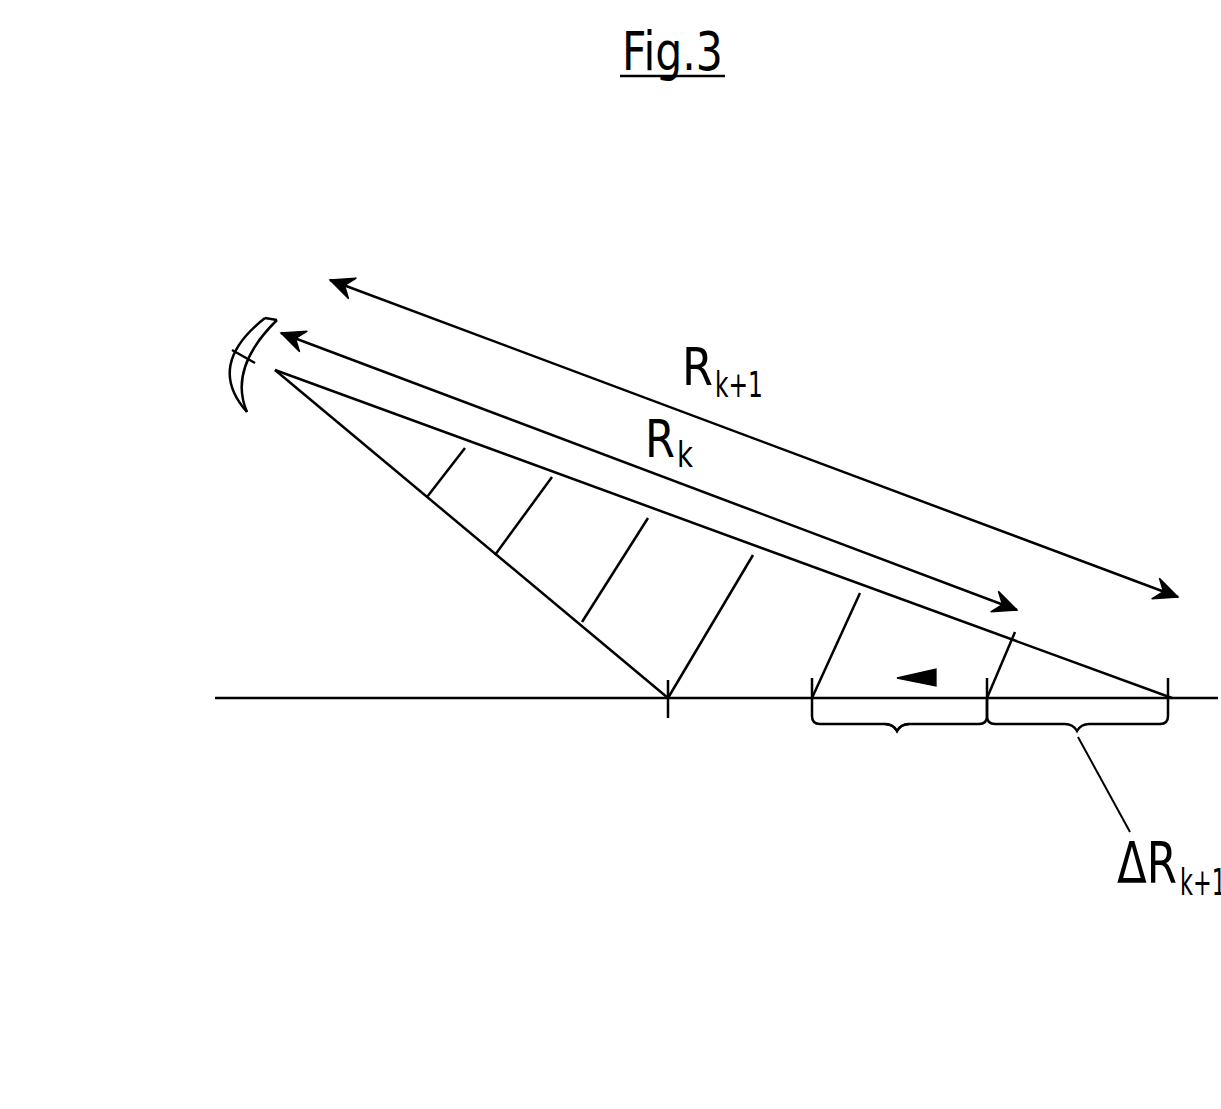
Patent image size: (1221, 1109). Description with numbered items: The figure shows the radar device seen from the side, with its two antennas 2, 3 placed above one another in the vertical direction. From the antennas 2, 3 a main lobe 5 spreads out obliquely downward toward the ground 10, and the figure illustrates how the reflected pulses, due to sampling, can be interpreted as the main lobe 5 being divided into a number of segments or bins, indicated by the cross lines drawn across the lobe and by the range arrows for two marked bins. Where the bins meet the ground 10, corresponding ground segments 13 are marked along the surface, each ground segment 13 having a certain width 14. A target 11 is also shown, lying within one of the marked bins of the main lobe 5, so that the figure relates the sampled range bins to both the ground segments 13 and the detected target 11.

The antenna 2 is at (230, 377).
The antenna 3 is at (250, 337).
The main lobe 5 is at (703, 572).
The ground surface 10 is at (753, 695).
The target 11 is at (918, 668).
The ground segment 13 is at (905, 735).
The width 14 is at (893, 728).